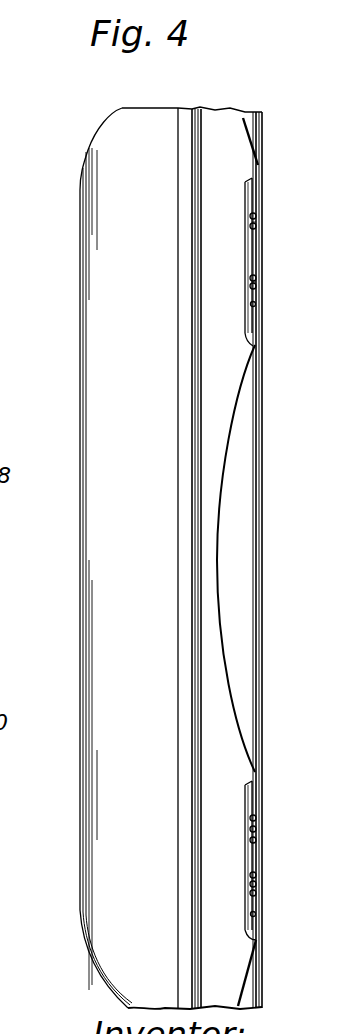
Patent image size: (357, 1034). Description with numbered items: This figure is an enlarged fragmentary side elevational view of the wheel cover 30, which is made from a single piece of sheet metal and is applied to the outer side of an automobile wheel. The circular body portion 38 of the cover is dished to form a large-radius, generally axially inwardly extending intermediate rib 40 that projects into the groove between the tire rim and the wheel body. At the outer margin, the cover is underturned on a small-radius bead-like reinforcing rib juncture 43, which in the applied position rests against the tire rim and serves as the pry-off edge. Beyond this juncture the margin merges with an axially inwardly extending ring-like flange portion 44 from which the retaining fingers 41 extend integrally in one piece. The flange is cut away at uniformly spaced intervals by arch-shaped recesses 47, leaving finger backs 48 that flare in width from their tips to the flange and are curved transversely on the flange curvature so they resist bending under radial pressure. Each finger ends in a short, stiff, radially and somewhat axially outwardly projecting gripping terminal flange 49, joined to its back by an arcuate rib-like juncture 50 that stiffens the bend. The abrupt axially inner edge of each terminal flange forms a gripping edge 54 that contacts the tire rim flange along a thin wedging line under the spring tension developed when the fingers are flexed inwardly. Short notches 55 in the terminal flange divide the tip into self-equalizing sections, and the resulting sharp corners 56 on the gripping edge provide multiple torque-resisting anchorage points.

The wheel cover 30 is at (76, 817).
The circular body portion 38 is at (93, 554).
The intermediate rib 40 is at (248, 545).
The retaining fingers 41 is at (263, 296).
The reinforcing rib juncture 43 is at (182, 686).
The ring-like flange portion 44 is at (213, 468).
The recesses 47 is at (218, 598).
The finger backs 48 is at (238, 358).
The gripping terminal flange 49 is at (248, 192).
The rib-like juncture 50 is at (255, 214).
The gripping edge 54 is at (250, 306).
The notches 55 is at (252, 227).
The sharp corners 56 is at (250, 216).